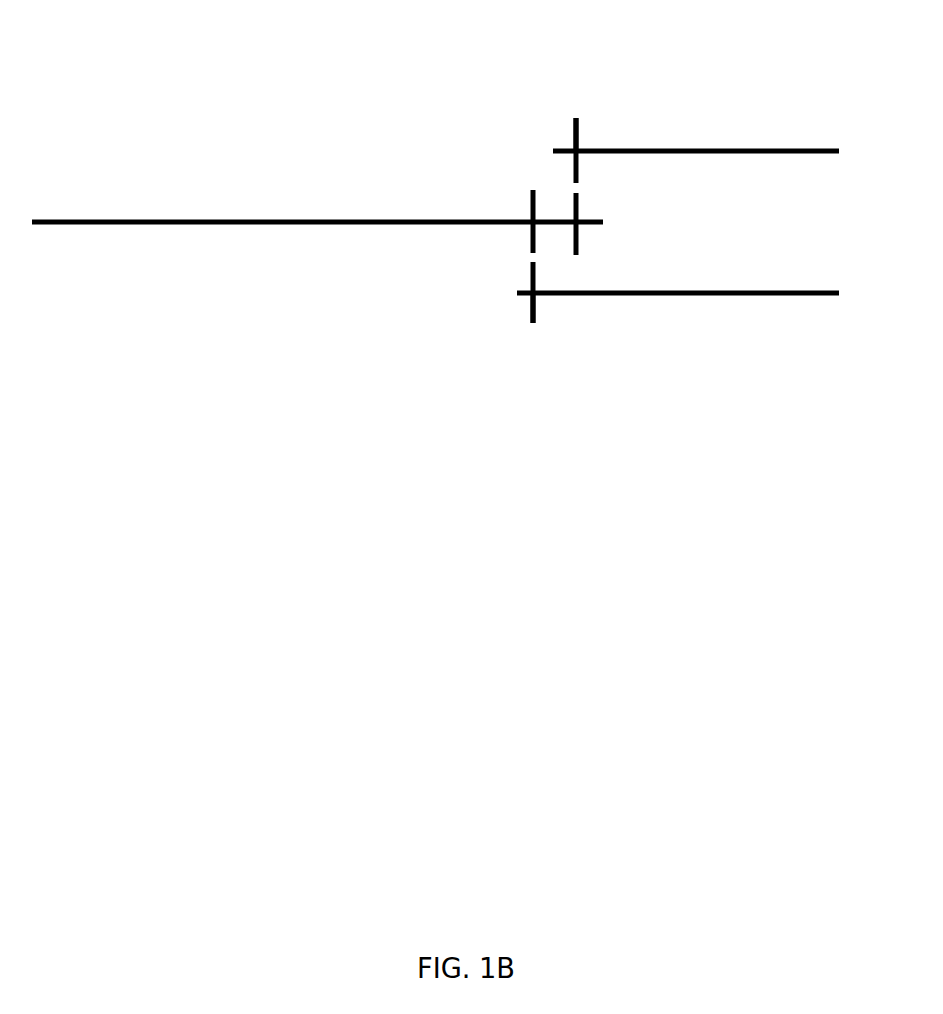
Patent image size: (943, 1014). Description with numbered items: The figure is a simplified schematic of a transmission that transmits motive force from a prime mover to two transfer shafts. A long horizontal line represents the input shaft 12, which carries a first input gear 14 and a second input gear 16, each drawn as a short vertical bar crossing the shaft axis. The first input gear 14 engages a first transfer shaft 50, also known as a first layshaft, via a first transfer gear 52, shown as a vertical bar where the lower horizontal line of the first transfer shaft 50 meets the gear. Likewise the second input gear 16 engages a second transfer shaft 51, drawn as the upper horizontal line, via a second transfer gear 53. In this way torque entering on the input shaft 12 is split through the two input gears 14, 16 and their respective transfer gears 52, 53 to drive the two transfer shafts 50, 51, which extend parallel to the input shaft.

The input shaft 12 is at (210, 219).
The first input gear 14 is at (531, 200).
The second input gear 16 is at (578, 203).
The first transfer shaft 50 is at (773, 296).
The second transfer shaft 51 is at (785, 148).
The first transfer gear 52 is at (533, 317).
The second transfer gear 53 is at (575, 118).